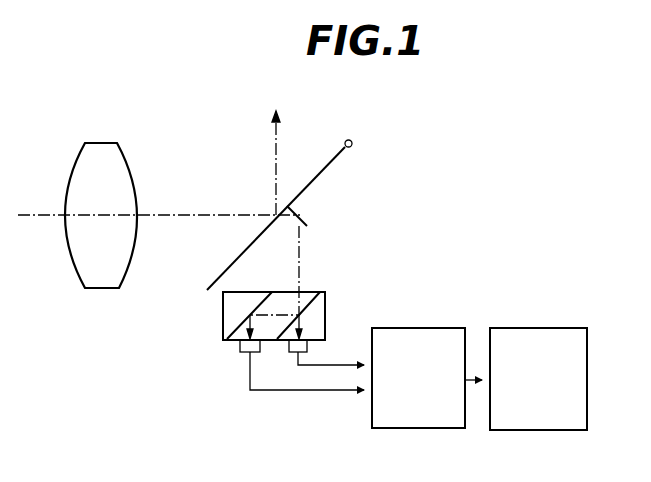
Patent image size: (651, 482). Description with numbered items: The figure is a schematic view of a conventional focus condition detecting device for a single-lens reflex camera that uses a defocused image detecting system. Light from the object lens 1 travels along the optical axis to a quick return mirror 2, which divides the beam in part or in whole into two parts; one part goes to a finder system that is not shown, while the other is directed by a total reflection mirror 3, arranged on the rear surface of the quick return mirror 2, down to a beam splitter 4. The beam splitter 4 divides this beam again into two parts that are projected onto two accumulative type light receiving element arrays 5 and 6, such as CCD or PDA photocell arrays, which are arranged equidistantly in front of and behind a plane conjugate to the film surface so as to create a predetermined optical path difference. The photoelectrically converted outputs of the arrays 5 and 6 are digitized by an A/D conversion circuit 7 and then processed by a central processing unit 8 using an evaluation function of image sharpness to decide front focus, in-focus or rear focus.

The object lens 1 is at (122, 150).
The quick return mirror 2 is at (330, 160).
The total reflection mirror 3 is at (309, 218).
The beam splitter 4 is at (318, 312).
The accumulative type light receiving element array 5 is at (307, 347).
The accumulative type light receiving element array 6 is at (240, 348).
The A/D conversion circuit 7 is at (446, 328).
The central processing unit 8 is at (553, 328).